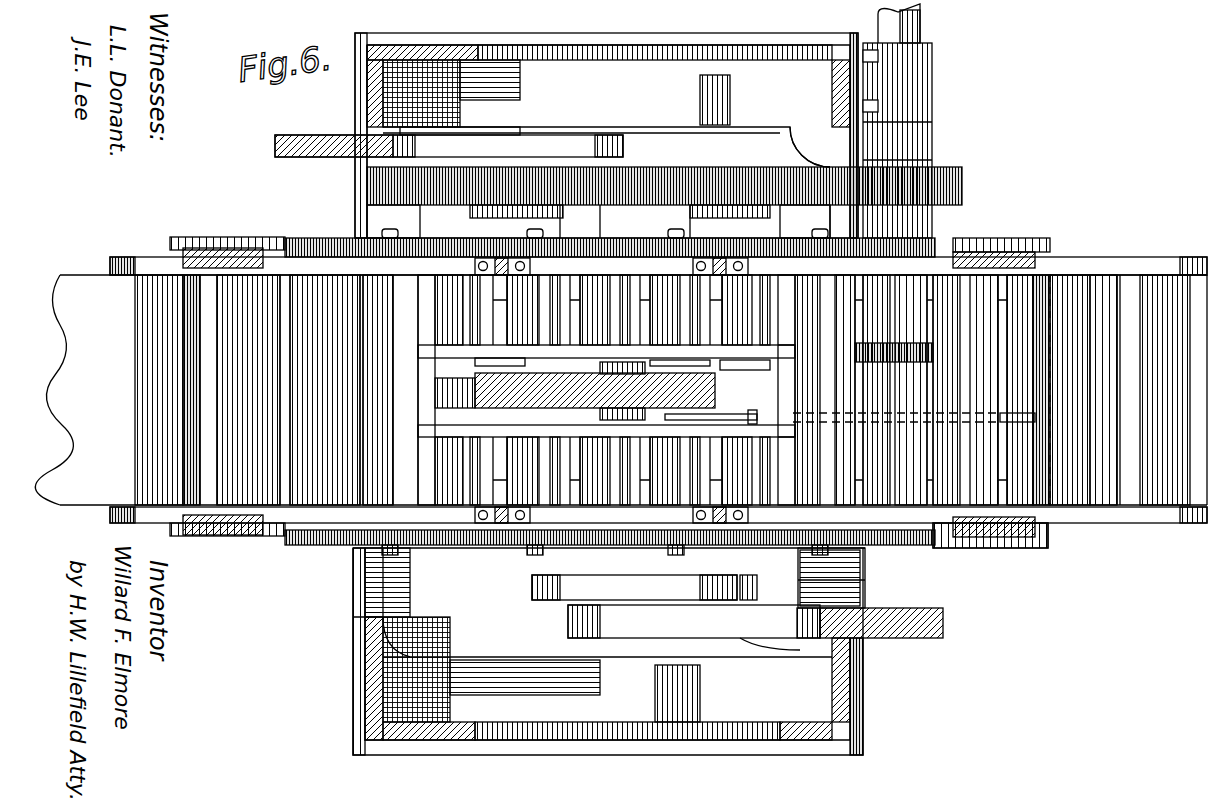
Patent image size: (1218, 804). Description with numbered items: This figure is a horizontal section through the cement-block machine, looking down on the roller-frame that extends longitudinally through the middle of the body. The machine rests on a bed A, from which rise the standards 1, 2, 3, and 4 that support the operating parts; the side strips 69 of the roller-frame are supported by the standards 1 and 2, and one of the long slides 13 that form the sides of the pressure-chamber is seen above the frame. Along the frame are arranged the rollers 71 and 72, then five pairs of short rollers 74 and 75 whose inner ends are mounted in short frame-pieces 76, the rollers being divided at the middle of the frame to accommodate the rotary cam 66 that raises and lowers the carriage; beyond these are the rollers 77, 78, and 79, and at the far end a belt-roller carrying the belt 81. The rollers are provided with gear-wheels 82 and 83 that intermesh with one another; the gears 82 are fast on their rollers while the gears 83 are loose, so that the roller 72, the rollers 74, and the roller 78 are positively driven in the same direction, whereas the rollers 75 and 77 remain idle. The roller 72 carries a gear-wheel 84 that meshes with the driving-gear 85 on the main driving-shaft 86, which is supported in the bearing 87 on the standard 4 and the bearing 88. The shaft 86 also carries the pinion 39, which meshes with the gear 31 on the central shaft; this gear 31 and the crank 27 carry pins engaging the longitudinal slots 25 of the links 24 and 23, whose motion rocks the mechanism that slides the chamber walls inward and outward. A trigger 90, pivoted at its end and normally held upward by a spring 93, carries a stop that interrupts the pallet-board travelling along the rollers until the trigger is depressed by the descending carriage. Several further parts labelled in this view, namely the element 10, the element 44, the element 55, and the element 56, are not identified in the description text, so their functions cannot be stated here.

The standard 1 is at (205, 248).
The standard 2 is at (990, 250).
The standard 3 is at (609, 651).
The standard 4 is at (538, 48).
The roller 10 is at (1135, 285).
The slide 13 is at (835, 588).
The link 23 is at (943, 622).
The link 24 is at (625, 147).
The longitudinal slot 25 is at (568, 620).
The crank 27 is at (532, 588).
The gear 31 is at (715, 180).
The pinion 39 is at (965, 180).
The armature block 44 is at (587, 448).
The plate 55 is at (513, 453).
The block 56 is at (420, 216).
The rotary cam 66 is at (455, 453).
The side strip 69 is at (1098, 270).
The roller 71 is at (955, 520).
The roller 72 is at (890, 522).
The short roller 74 is at (472, 347).
The short roller 75 is at (700, 450).
The short frame-piece 76 is at (785, 427).
The roller 77 is at (353, 535).
The roller 78 is at (300, 524).
The roller 79 is at (248, 523).
The belt 81 is at (72, 275).
The gear-wheel 82 is at (315, 240).
The gear-wheel 83 is at (425, 242).
The gear-wheel 84 is at (885, 343).
The driving-gear 85 is at (933, 352).
The main driving-shaft 86 is at (920, 25).
The bearing 87 is at (918, 98).
The bearing 88 is at (560, 215).
The trigger 90 is at (1010, 413).
The spring 93 is at (750, 425).
The bed A is at (845, 605).